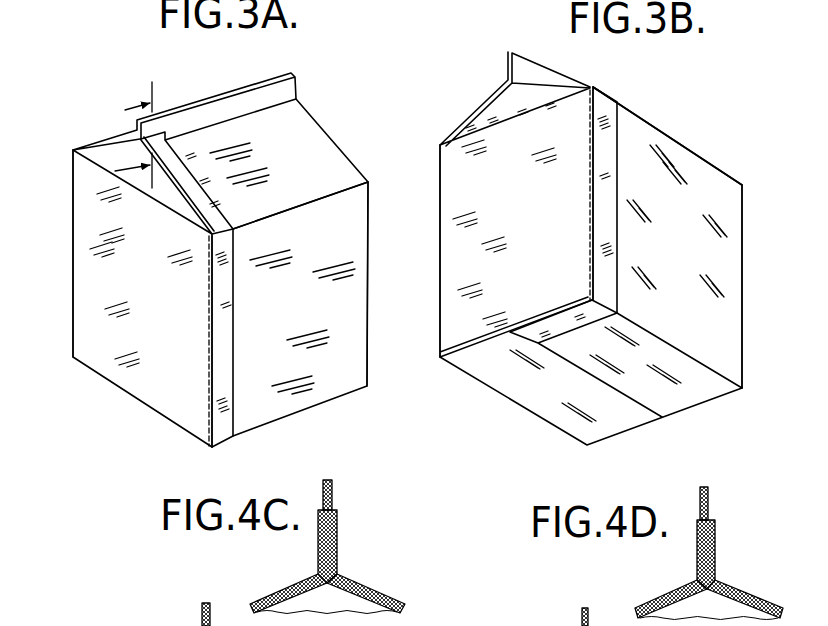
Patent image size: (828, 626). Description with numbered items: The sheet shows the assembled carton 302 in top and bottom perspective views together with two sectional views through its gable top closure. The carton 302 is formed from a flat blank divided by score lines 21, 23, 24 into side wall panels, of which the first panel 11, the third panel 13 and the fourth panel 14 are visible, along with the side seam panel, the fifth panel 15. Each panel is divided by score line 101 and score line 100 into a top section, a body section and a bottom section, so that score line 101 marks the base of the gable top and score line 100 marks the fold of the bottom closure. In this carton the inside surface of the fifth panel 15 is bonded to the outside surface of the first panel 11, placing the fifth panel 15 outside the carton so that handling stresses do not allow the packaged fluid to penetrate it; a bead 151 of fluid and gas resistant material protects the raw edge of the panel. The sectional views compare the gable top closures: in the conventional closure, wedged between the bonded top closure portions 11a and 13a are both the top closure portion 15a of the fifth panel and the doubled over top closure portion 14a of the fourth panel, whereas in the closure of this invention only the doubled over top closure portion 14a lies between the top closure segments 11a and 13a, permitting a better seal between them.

In FIG. 3A, the carton 302 is at (340, 136).
In FIG. 3B, the carton 302 is at (707, 148).
In FIG. 3A, the score line 101 is at (285, 209).
In FIG. 3B, the score line 101 is at (662, 130).
In FIG. 3A, the fourth panel 14 is at (153, 289).
In FIG. 3B, the fourth panel 14 is at (529, 209).
In FIG. 3A, the first panel 11 is at (303, 306).
In FIG. 3B, the first panel 11 is at (687, 250).
In FIG. 3A, the fifth panel 15 is at (231, 367).
In FIG. 3B, the fifth panel 15 is at (604, 200).
In FIG. 3A, the bead 151 is at (209, 338).
In FIG. 3B, the bead 151 is at (590, 230).
In FIG. 3A, the score line 24 is at (212, 392).
In FIG. 3B, the score line 24 is at (592, 272).
In FIG. 3A, the score line 23 is at (74, 265).
In FIG. 3B, the score line 23 is at (440, 220).
In FIG. 3A, the score line 21 is at (368, 285).
In FIG. 3B, the score line 21 is at (743, 275).
In FIG. 3B, the score line 100 is at (672, 345).
In FIG. 3B, the third panel 13 is at (530, 405).
In FIG. 4C, the top closure portion of first panel 11a is at (337, 555).
In FIG. 4D, the top closure portion of first panel 11a is at (717, 553).
In FIG. 4C, the top closure portion of third panel 13a is at (318, 553).
In FIG. 4D, the top closure portion of third panel 13a is at (697, 567).
In FIG. 4C, the top closure portion of fourth panel 14a is at (297, 588).
In FIG. 4D, the top closure portion of fourth panel 14a is at (675, 598).
In FIG. 4C, the top closure portion of fifth panel 15a is at (383, 590).
In FIG. 4D, the top closure portion of fifth panel 15a is at (758, 598).